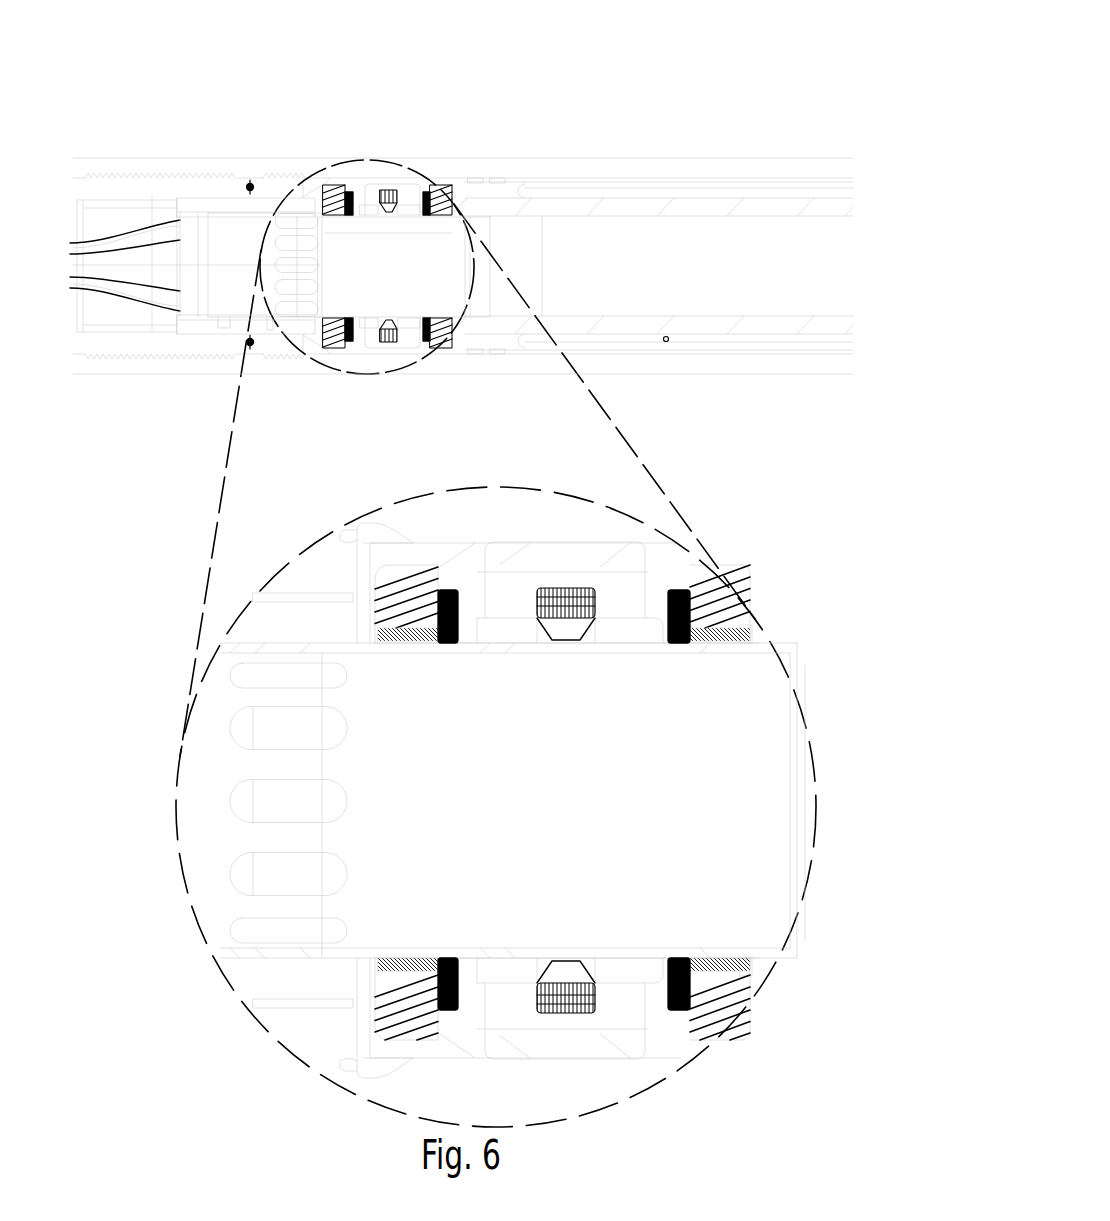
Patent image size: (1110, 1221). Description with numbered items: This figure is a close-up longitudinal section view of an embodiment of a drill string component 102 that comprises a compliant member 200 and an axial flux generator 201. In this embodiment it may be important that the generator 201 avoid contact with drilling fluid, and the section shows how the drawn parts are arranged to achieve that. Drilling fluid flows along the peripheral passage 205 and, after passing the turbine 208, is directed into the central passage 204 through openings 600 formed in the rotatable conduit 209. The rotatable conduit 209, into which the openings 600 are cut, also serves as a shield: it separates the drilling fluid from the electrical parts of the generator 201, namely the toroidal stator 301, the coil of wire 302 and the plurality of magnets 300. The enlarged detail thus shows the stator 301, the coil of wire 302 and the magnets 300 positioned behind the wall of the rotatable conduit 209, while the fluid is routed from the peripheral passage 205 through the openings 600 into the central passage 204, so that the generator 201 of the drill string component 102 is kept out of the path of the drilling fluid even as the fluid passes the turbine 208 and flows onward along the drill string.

The drill string component 102 is at (278, 124).
The compliant member 200 is at (135, 240).
The turbine 208 is at (235, 212).
The axial flux generator 201 is at (380, 188).
The central passage 204 is at (253, 315).
The peripheral passage 205 is at (438, 695).
The openings 600 is at (240, 880).
The coil of wire 302 is at (568, 610).
The plurality of magnets 300 is at (567, 982).
The toroidal stator 301 is at (620, 1013).
The rotatable conduit 209 is at (372, 955).